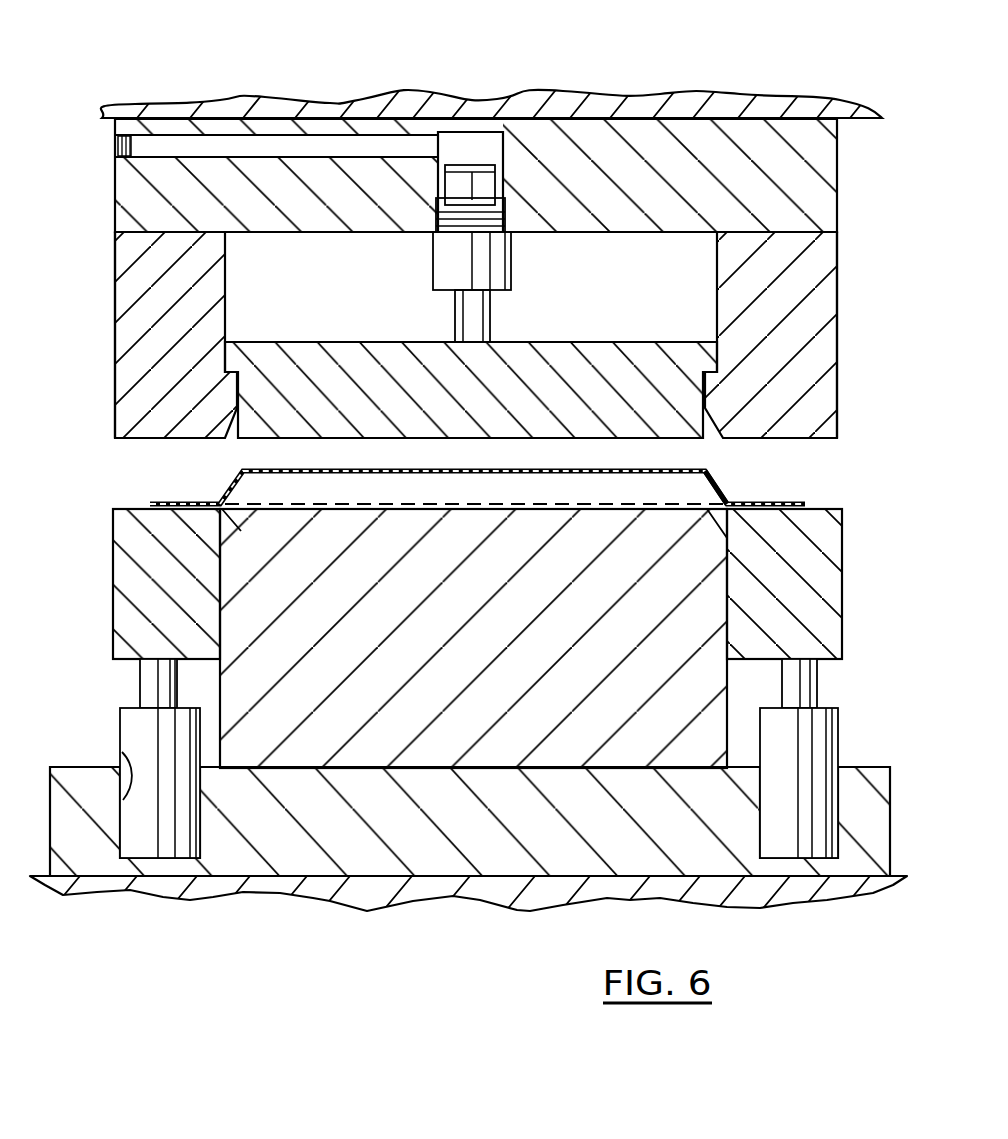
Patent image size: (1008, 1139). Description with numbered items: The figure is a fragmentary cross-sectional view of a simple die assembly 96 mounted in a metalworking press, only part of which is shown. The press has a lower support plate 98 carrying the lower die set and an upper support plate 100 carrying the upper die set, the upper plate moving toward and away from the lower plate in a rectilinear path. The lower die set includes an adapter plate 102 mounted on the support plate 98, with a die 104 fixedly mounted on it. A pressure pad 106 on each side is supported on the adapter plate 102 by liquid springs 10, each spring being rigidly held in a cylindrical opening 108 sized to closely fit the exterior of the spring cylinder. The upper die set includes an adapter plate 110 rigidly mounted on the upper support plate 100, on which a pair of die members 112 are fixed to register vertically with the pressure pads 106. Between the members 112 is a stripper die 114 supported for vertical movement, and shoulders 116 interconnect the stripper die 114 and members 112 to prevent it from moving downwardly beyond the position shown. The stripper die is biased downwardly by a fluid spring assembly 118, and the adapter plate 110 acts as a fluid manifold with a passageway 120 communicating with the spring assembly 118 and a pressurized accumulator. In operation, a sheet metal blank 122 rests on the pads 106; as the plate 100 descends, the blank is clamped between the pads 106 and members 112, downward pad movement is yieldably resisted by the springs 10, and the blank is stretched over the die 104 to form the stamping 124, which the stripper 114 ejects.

The liquid spring 10 is at (125, 723).
The die assembly 96 is at (842, 347).
The support plate 98 is at (282, 890).
The support plate 100 is at (647, 106).
The adapter plate 102 is at (864, 767).
The die 104 is at (710, 690).
The pressure pad 106 is at (145, 552).
The cylindrical opening 108 is at (124, 756).
The adapter plate 110 is at (812, 188).
The die member 112 is at (135, 280).
The stripper die 114 is at (602, 356).
The shoulder 116 is at (707, 357).
The fluid spring assembly 118 is at (492, 318).
The passageway 120 is at (142, 148).
The sheet metal blank 122 is at (626, 500).
The stamping 124 is at (727, 486).